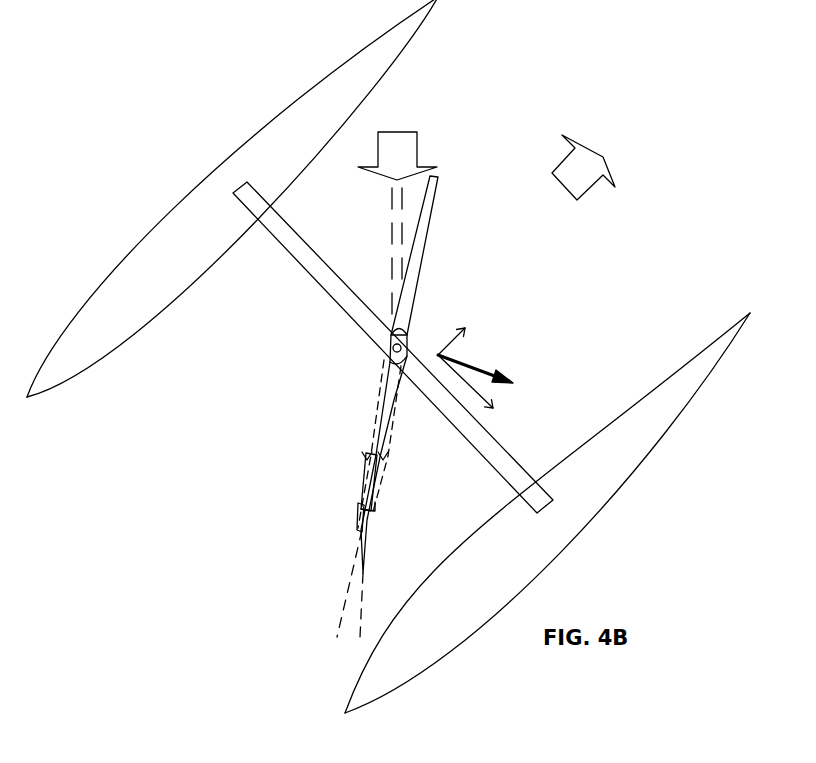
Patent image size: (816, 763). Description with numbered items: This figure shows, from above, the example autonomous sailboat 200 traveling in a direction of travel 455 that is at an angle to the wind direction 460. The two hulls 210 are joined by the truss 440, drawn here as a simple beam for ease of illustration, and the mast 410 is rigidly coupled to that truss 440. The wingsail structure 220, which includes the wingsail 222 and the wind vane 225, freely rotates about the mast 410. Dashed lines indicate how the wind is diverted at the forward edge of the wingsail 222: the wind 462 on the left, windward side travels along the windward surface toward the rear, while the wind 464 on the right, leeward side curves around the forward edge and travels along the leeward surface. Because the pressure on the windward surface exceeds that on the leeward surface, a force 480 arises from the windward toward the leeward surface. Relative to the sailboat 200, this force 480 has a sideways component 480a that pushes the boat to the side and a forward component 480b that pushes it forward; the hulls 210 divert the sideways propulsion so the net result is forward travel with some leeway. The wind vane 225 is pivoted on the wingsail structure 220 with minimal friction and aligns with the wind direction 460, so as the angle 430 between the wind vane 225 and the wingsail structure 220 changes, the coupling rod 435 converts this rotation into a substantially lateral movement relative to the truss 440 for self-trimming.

The sailboat 200 is at (197, 388).
The hulls 210 is at (308, 115).
The wingsail structure 220 is at (409, 273).
The wingsail 222 is at (392, 367).
The wind vane 225 is at (357, 522).
The mast 410 is at (388, 349).
The angle 430 is at (358, 642).
The coupling rod 435 is at (380, 493).
The truss 440 is at (297, 252).
The direction of travel 455 is at (588, 168).
The wind direction 460 is at (401, 150).
The windward wind 462 is at (388, 303).
The leeward wind 464 is at (410, 338).
The force 480 is at (512, 377).
The sideways force component 480a is at (493, 400).
The forward force component 480b is at (441, 348).